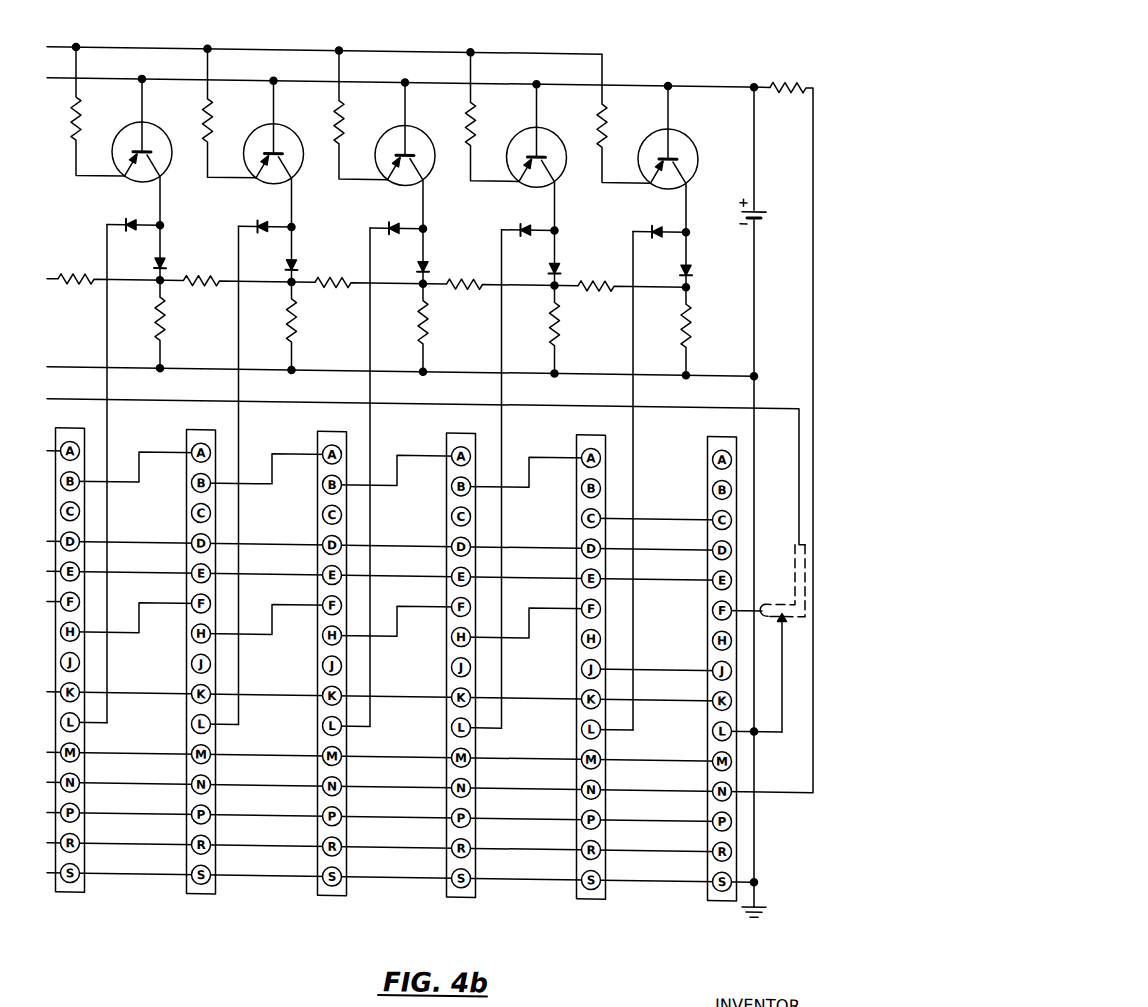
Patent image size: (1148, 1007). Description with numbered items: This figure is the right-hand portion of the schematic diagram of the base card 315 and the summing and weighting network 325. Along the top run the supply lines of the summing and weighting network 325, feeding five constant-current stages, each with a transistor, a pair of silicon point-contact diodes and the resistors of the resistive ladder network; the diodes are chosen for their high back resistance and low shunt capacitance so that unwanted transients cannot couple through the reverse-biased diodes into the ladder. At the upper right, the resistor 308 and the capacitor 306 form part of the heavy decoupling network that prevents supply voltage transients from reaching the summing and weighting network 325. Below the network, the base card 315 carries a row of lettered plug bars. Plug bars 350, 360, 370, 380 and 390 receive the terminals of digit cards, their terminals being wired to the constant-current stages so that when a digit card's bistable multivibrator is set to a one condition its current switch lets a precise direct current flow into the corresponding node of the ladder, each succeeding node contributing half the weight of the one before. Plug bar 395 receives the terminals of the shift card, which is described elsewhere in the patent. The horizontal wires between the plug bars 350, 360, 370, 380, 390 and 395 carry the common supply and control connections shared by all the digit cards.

The summing and weighting network 325 is at (377, 24).
The resistor 308 is at (774, 66).
The capacitor 306 is at (762, 198).
The base card 315 is at (392, 944).
The plug bar 350 is at (73, 892).
The plug bar 360 is at (195, 892).
The plug bar 370 is at (326, 892).
The plug bar 380 is at (455, 892).
The plug bar 390 is at (586, 892).
The plug bar 395 is at (716, 892).